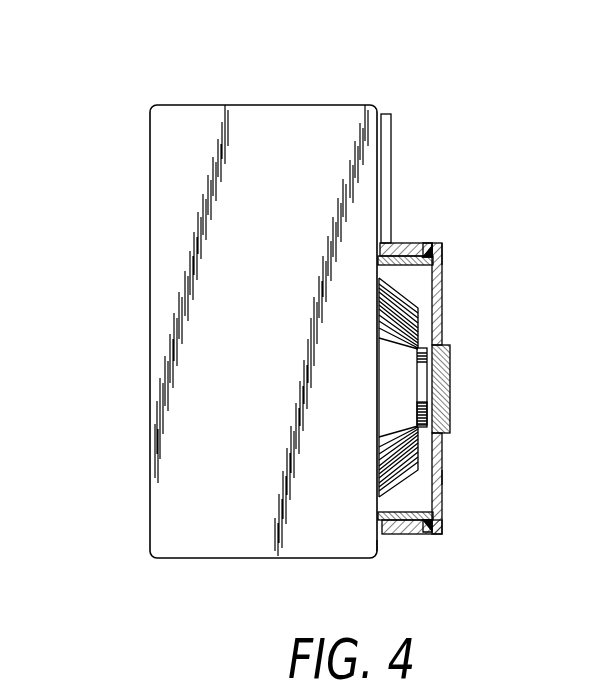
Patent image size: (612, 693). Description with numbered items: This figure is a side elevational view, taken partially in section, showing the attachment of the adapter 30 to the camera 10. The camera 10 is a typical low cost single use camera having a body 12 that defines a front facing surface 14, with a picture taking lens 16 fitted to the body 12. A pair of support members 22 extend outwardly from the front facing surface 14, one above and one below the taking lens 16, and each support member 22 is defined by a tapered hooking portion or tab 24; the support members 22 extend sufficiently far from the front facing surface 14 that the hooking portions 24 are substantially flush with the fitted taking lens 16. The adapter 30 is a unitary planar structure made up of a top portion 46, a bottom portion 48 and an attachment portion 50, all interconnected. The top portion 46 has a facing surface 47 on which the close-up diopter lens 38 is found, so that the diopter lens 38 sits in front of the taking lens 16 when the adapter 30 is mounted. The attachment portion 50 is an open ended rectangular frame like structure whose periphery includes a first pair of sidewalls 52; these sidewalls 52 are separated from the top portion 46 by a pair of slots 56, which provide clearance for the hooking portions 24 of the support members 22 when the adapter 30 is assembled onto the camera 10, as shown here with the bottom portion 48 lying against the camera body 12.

The camera 10 is at (133, 97).
The body 12 is at (340, 103).
The front facing surface 14 is at (382, 548).
The picture taking lens 16 is at (421, 350).
The support members 22 is at (405, 268).
The hooking portion 24 is at (430, 253).
The adapter 30 is at (453, 477).
The close-up diopter lens 38 is at (450, 360).
The top portion 46 is at (443, 452).
The facing surface 47 is at (443, 465).
The bottom portion 48 is at (395, 113).
The attachment portion 50 is at (447, 247).
The first pair of sidewalls 52 is at (403, 243).
The slots 56 is at (436, 258).